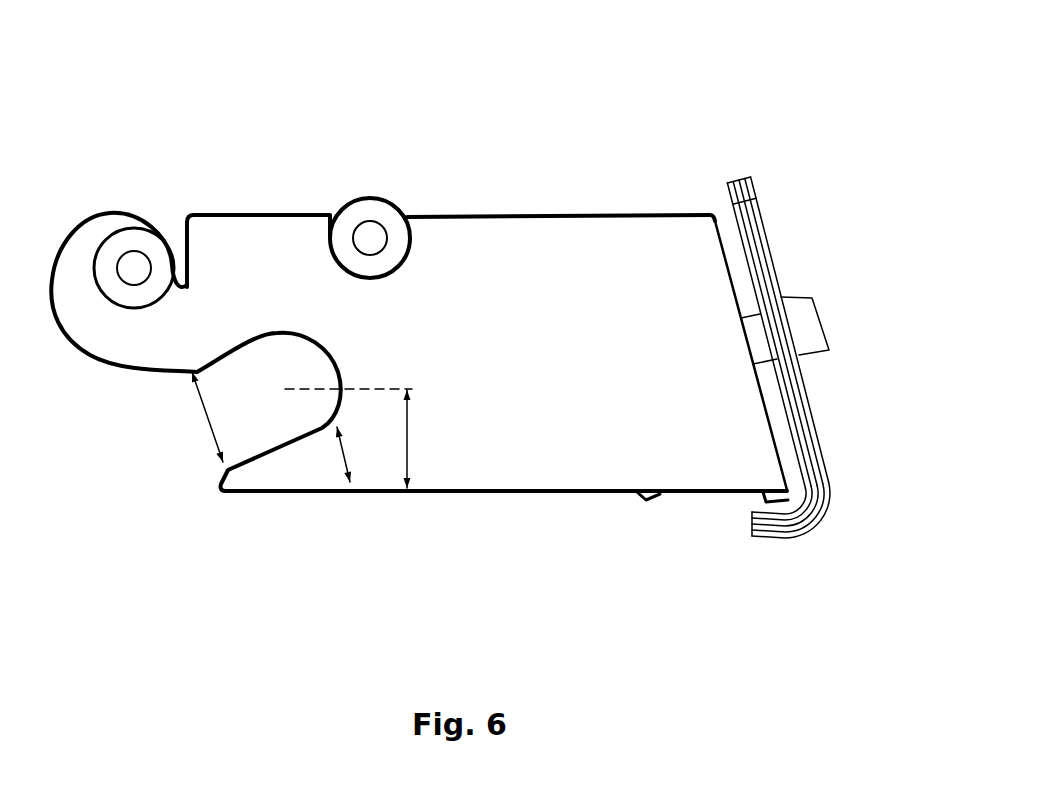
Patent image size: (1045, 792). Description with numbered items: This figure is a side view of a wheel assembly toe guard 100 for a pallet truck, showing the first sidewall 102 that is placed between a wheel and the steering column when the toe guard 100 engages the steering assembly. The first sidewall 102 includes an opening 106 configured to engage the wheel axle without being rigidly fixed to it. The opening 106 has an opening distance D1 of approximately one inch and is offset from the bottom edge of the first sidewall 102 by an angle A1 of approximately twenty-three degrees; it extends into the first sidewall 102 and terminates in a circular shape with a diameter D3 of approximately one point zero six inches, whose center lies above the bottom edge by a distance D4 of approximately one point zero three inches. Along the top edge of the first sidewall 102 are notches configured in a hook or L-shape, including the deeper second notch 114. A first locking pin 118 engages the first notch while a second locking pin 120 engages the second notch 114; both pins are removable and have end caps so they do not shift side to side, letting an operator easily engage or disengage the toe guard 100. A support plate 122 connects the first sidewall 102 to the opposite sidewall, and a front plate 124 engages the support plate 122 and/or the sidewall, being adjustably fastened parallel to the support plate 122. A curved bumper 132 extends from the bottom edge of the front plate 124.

The wheel assembly toe guard 100 is at (690, 42).
The first sidewall 102 is at (582, 390).
The opening 106 is at (155, 382).
The second notch 114 is at (172, 228).
The first locking pin 118 is at (368, 240).
The second locking pin 120 is at (134, 262).
The support plate 122 is at (640, 500).
The front plate 124 is at (753, 267).
The bumper 132 is at (790, 528).
The opening distance D1 is at (208, 415).
The diameter of circular shape D3 is at (335, 355).
The distance of circle center above bottom edge D4 is at (410, 437).
The angle of opening offset A1 is at (348, 442).